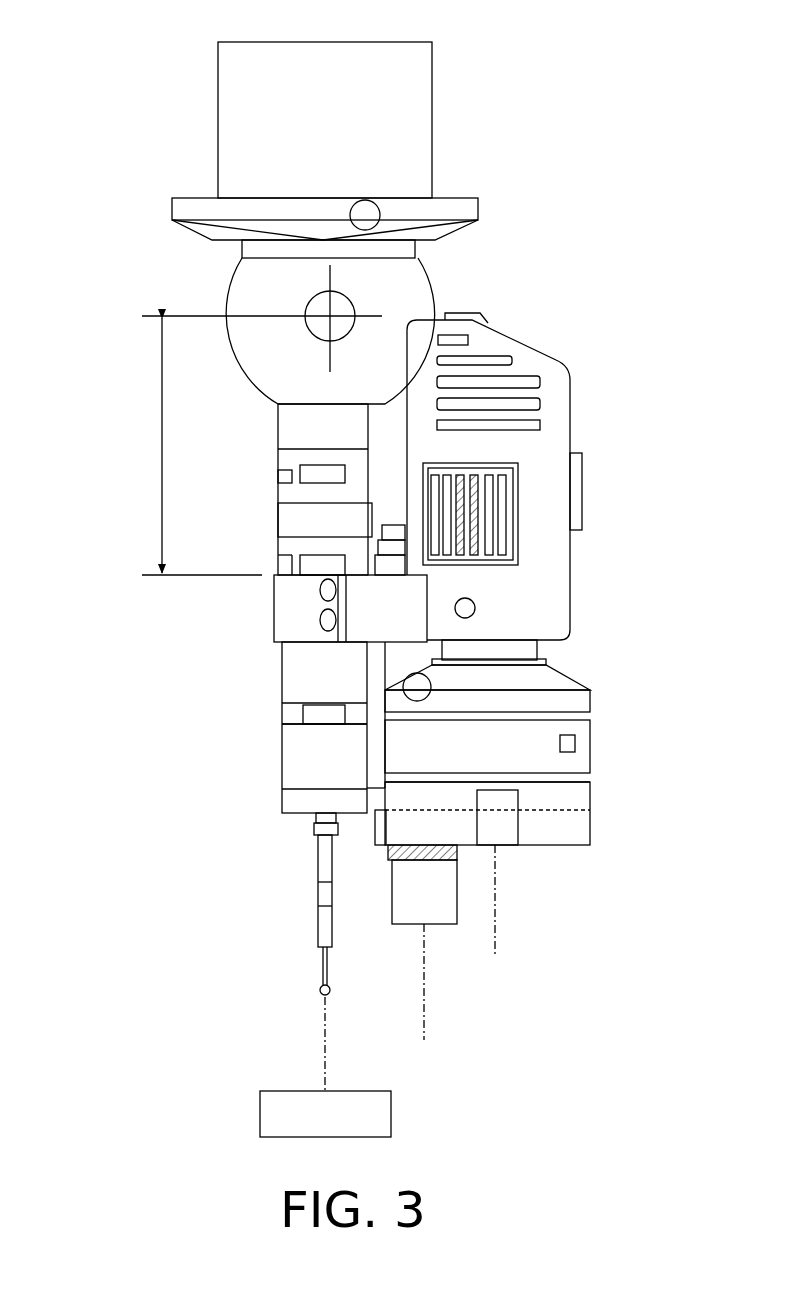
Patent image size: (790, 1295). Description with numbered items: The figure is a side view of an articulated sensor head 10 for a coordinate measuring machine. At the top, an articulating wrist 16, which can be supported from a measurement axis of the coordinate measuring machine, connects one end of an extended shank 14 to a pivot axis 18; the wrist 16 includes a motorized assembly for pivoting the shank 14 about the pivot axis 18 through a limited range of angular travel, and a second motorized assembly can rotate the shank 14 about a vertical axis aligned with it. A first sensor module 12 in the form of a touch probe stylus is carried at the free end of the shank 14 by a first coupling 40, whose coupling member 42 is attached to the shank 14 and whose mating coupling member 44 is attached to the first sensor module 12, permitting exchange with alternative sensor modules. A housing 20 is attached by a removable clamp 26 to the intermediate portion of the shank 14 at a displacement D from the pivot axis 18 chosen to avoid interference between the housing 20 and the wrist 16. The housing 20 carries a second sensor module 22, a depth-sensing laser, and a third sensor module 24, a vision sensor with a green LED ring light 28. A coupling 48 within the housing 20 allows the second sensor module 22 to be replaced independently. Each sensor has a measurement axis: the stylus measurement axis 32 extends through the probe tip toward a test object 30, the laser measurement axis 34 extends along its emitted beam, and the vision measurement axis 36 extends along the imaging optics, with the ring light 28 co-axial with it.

The articulated sensor head 10 is at (143, 50).
The first sensor module 12 is at (313, 917).
The extended shank 14 is at (287, 520).
The articulating wrist 16 is at (232, 280).
The pivot axis 18 is at (345, 308).
The housing 20 is at (572, 410).
The second sensor module 22 is at (407, 926).
The third sensor module 24 is at (590, 757).
The removable clamp 26 is at (300, 606).
The ring light 28 is at (585, 828).
The test object 30 is at (258, 1118).
The measurement axis 32 is at (327, 1040).
The measurement axis 34 is at (425, 1000).
The measurement axis 36 is at (497, 922).
The first coupling 40 is at (268, 710).
The coupling member 42 is at (325, 703).
The mating coupling member 44 is at (313, 726).
The coupling 48 is at (388, 851).
The displacement D is at (160, 447).